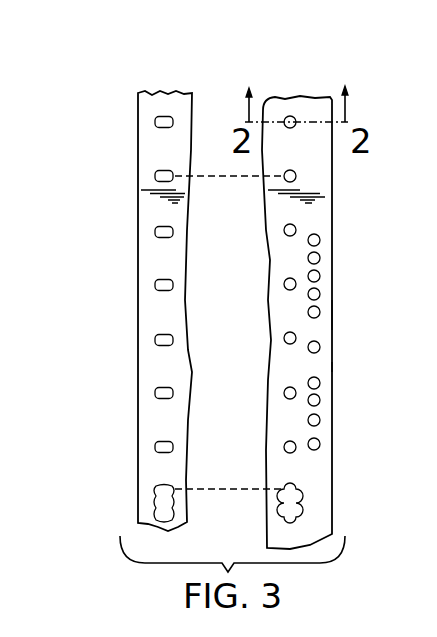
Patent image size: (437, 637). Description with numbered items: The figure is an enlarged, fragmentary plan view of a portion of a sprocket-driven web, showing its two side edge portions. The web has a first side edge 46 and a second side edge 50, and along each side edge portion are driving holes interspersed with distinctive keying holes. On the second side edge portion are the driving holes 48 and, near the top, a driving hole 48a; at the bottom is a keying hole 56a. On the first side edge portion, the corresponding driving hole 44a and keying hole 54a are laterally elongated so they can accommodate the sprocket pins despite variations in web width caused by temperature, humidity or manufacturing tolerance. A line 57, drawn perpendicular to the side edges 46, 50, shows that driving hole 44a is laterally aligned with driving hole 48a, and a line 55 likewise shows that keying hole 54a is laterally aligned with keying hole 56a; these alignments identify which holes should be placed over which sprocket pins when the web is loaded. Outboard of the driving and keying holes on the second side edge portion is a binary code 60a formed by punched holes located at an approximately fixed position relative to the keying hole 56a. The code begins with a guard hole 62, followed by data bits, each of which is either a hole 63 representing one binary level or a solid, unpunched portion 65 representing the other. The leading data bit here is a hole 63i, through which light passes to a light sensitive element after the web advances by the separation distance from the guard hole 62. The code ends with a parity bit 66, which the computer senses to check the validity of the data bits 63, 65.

The side edge 46 is at (138, 272).
The driving hole 44a is at (156, 176).
The keying hole 54a is at (155, 490).
The side edge 50 is at (333, 334).
The driving hole 48 is at (284, 338).
The driving hole 48a is at (291, 170).
The keying hole 56a is at (288, 488).
The line 57 is at (222, 176).
The line 55 is at (222, 489).
The parity bit 66 is at (320, 236).
The hole 63 is at (320, 273).
The unpunched portion 65 is at (320, 366).
The initial data bit 63i is at (320, 420).
The guard hole 62 is at (320, 444).
The binary code 60a is at (333, 316).